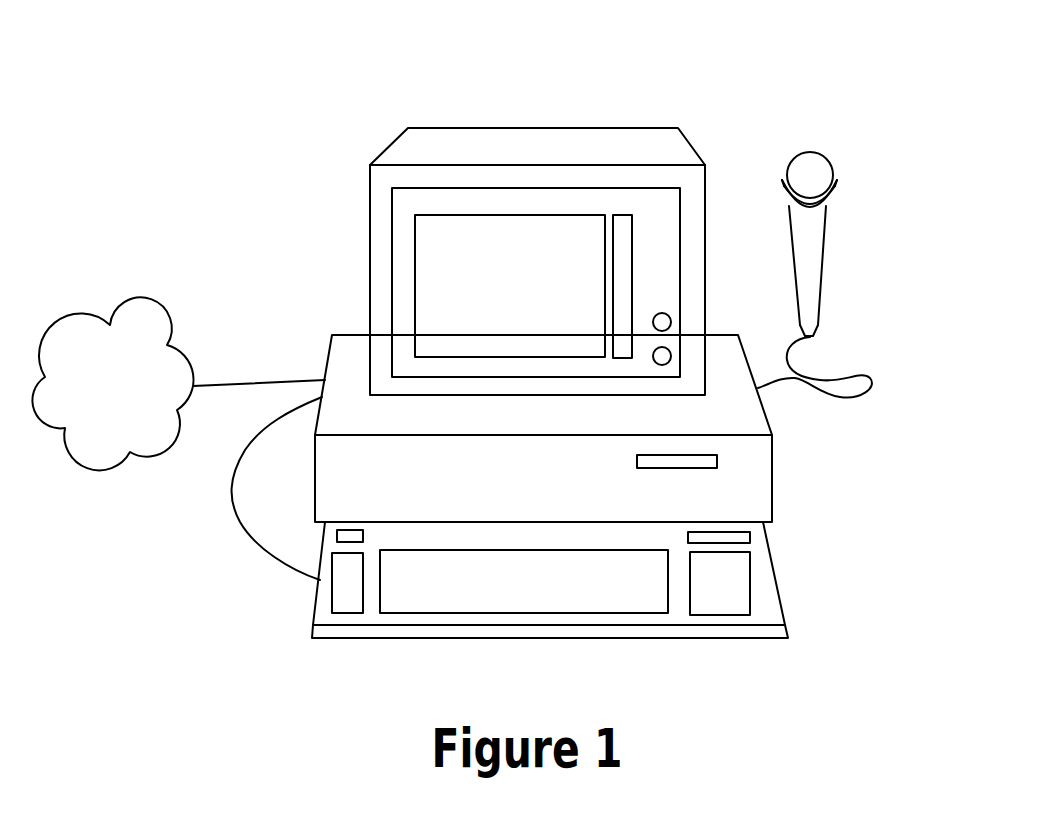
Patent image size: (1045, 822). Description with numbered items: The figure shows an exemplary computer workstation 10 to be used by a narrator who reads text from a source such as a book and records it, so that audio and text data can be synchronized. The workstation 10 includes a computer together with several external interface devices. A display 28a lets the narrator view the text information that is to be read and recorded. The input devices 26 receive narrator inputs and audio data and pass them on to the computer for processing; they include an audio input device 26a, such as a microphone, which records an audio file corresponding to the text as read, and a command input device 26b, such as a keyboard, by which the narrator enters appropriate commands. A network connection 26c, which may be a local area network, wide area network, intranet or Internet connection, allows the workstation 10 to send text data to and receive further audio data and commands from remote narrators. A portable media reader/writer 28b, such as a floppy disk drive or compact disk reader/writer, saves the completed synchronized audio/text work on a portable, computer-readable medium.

The computer workstation 10 is at (259, 37).
The input device(s) 26 is at (773, 505).
The audio input device 26a is at (825, 248).
The command input device 26b is at (780, 588).
The network connection 26c is at (95, 313).
The display 28a is at (445, 137).
The portable media reader/writer 28b is at (637, 462).